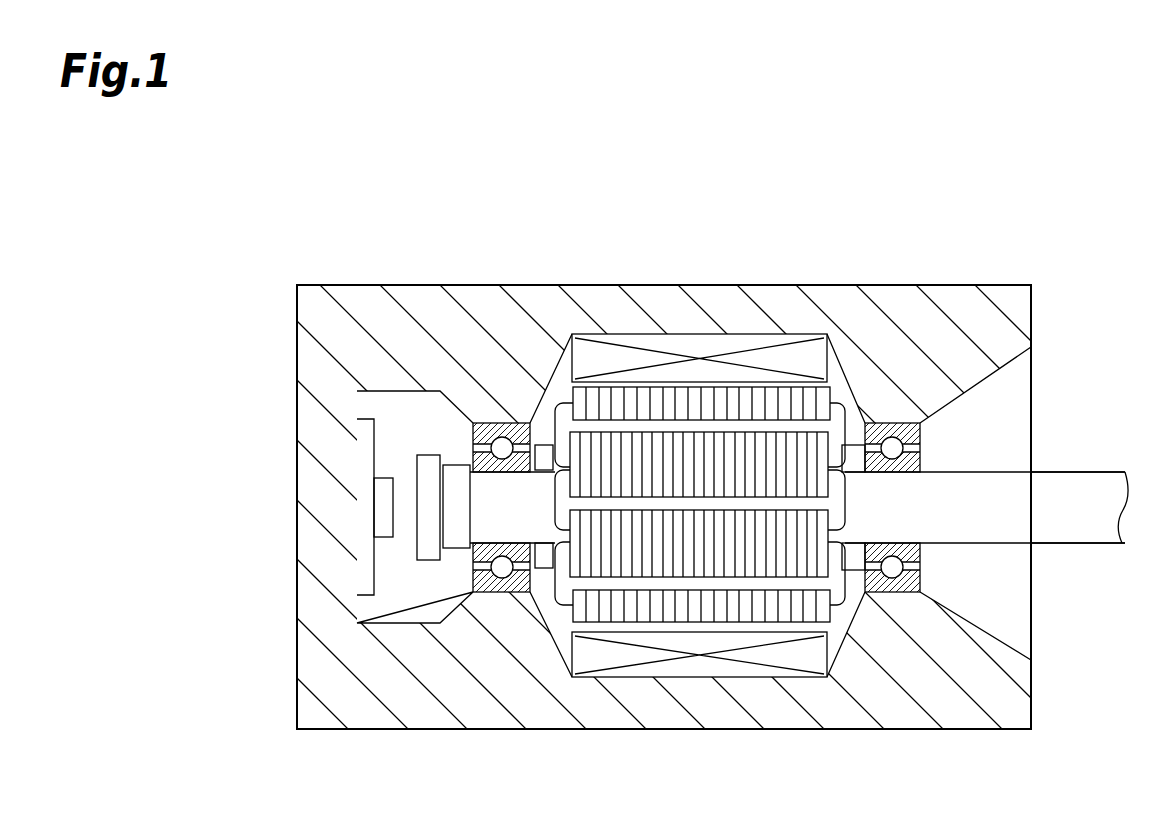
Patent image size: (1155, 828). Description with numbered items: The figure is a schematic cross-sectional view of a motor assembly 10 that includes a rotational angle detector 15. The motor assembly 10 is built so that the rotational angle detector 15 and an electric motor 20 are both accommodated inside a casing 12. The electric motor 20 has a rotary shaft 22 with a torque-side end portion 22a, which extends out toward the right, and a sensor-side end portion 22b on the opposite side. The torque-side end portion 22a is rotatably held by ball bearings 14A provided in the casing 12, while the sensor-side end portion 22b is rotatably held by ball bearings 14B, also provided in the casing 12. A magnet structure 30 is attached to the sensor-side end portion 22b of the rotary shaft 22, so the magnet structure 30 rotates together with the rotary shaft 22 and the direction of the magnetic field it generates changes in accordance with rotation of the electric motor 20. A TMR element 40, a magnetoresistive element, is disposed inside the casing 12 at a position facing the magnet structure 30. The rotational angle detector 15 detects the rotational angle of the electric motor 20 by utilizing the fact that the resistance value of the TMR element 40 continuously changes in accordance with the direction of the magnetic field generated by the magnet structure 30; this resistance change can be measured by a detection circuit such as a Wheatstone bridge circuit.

The motor assembly 10 is at (318, 260).
The casing 12 is at (693, 298).
The ball bearings 14A is at (890, 421).
The ball bearings 14B is at (500, 421).
The rotational angle detector 15 is at (415, 408).
The electric motor 20 is at (562, 613).
The rotary shaft 22 is at (766, 589).
The torque-side end portion 22a is at (1083, 525).
The sensor-side end portion 22b is at (493, 525).
The magnet structure 30 is at (424, 448).
The TMR element 40 is at (380, 478).